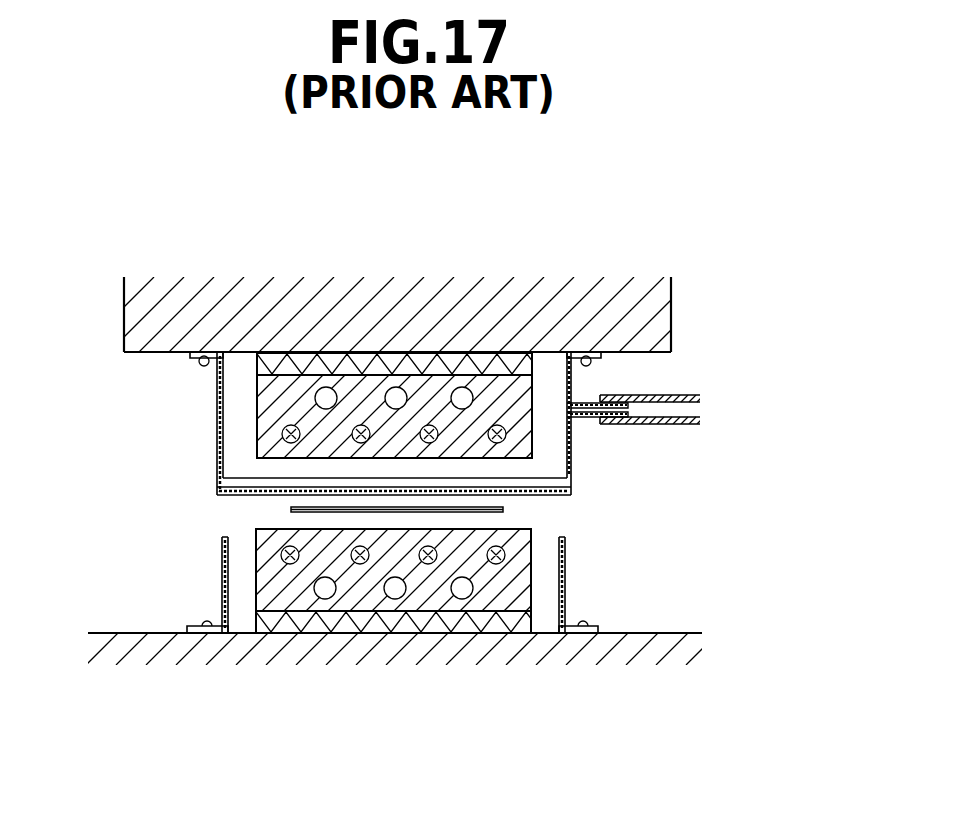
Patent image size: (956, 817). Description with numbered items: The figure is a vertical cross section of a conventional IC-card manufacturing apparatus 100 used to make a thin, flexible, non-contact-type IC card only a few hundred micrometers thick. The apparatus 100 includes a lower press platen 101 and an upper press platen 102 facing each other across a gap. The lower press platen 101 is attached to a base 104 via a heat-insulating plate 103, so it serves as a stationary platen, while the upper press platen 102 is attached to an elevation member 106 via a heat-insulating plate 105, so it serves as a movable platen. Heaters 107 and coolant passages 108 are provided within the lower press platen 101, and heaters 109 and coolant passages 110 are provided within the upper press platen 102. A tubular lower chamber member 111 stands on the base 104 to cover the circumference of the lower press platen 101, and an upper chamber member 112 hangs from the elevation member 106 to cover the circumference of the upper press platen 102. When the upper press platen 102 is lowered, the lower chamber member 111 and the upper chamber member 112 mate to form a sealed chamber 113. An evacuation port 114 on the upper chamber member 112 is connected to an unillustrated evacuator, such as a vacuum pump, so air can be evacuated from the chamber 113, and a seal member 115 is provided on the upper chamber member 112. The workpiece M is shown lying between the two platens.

The IC-card manufacturing apparatus 100 is at (716, 296).
The lower press platen 101 is at (256, 580).
The upper press platen 102 is at (257, 413).
The heat-insulating plate 103 is at (397, 622).
The base 104 is at (163, 633).
The heat-insulating plate 105 is at (476, 353).
The elevation member 106 is at (124, 325).
The heaters 107 is at (360, 564).
The coolant passages 108 is at (462, 599).
The heaters 109 is at (362, 425).
The coolant passages 110 is at (461, 387).
The lower chamber member 111 is at (566, 587).
The upper chamber member 112 is at (571, 452).
The sealed chamber 113 is at (203, 478).
The evacuation port 114 is at (585, 402).
The seal member 115 is at (568, 497).
The substrate M is at (503, 510).